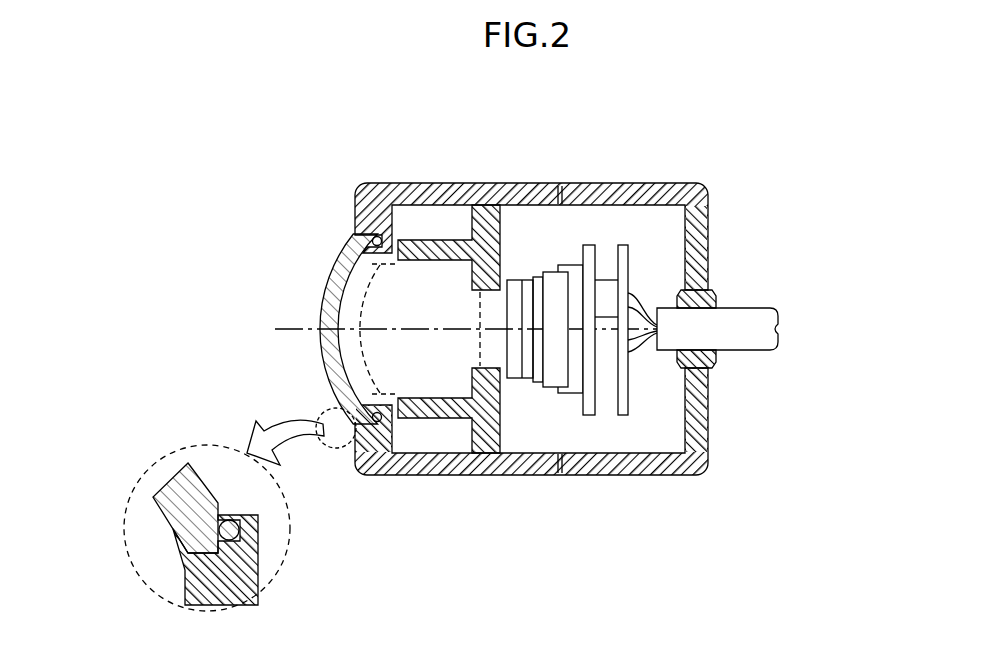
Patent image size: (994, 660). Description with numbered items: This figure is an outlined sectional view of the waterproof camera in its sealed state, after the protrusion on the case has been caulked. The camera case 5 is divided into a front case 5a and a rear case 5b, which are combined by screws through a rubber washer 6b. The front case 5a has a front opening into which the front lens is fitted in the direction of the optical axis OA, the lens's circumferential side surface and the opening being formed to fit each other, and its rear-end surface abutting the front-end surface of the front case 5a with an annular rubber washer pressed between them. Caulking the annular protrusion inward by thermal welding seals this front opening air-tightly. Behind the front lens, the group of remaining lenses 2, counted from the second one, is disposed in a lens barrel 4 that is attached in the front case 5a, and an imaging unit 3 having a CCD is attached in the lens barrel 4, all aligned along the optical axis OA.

The group of remaining lenses 2 is at (320, 354).
The imaging unit 3 is at (650, 258).
The lens barrel 4 is at (560, 418).
The camera case 5 is at (567, 348).
The front case 5a is at (449, 190).
The rear case 5b is at (698, 437).
The rubber washer 6b is at (555, 478).
The optical axis OA is at (300, 328).